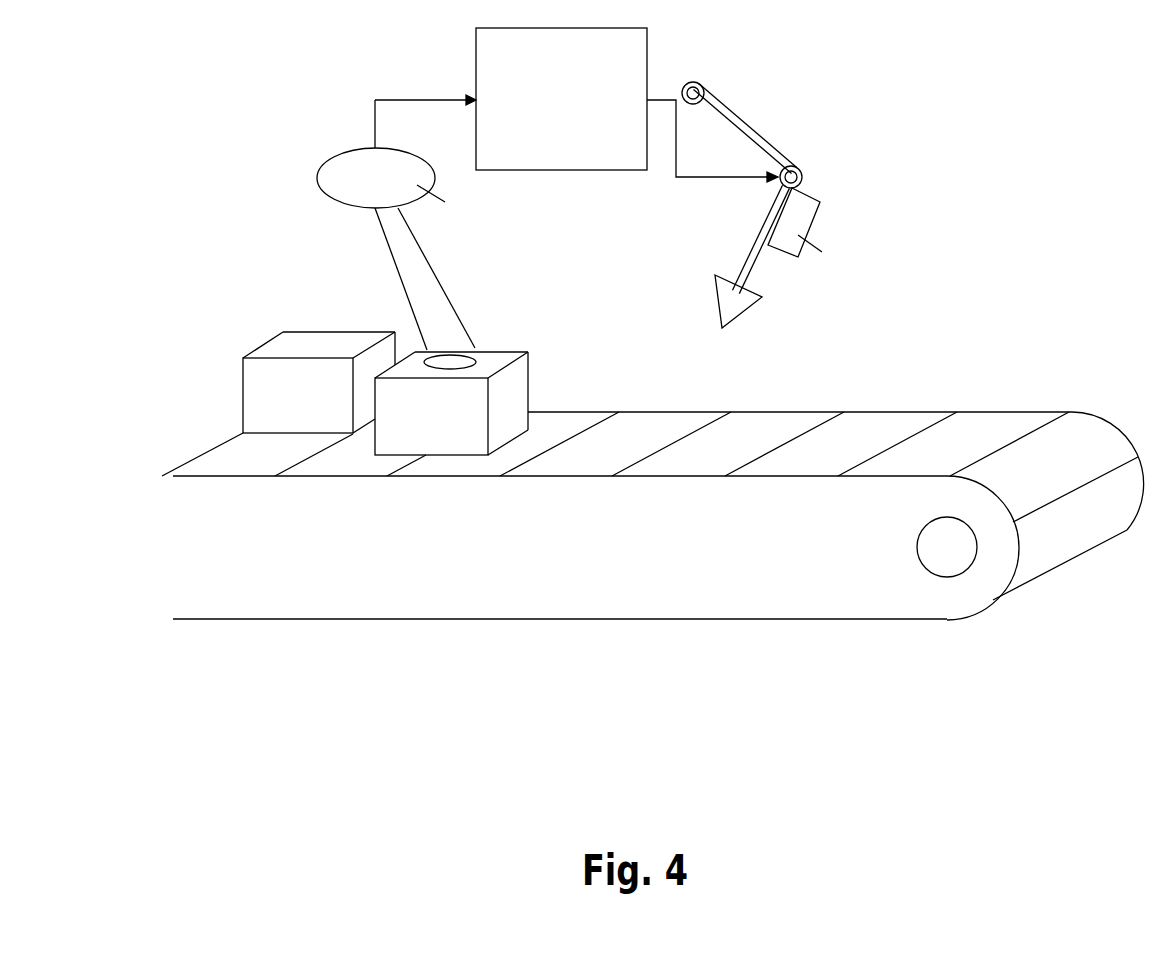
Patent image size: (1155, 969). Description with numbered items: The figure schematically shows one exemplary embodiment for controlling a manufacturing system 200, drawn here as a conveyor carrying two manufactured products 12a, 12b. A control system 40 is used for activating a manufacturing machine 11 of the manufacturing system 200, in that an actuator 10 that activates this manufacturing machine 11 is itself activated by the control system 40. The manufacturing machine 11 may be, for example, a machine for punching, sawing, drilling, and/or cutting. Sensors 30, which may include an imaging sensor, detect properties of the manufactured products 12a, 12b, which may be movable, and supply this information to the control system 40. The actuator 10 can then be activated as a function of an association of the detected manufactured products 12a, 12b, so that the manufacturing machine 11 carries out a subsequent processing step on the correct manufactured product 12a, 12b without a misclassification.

The manufacturing system 200 is at (548, 623).
The manufactured product 12a is at (533, 383).
The manufactured product 12b is at (260, 345).
The sensors 30 is at (317, 180).
The control system 40 is at (462, 37).
The manufacturing machine 11 is at (762, 145).
The actuator 10 is at (817, 220).